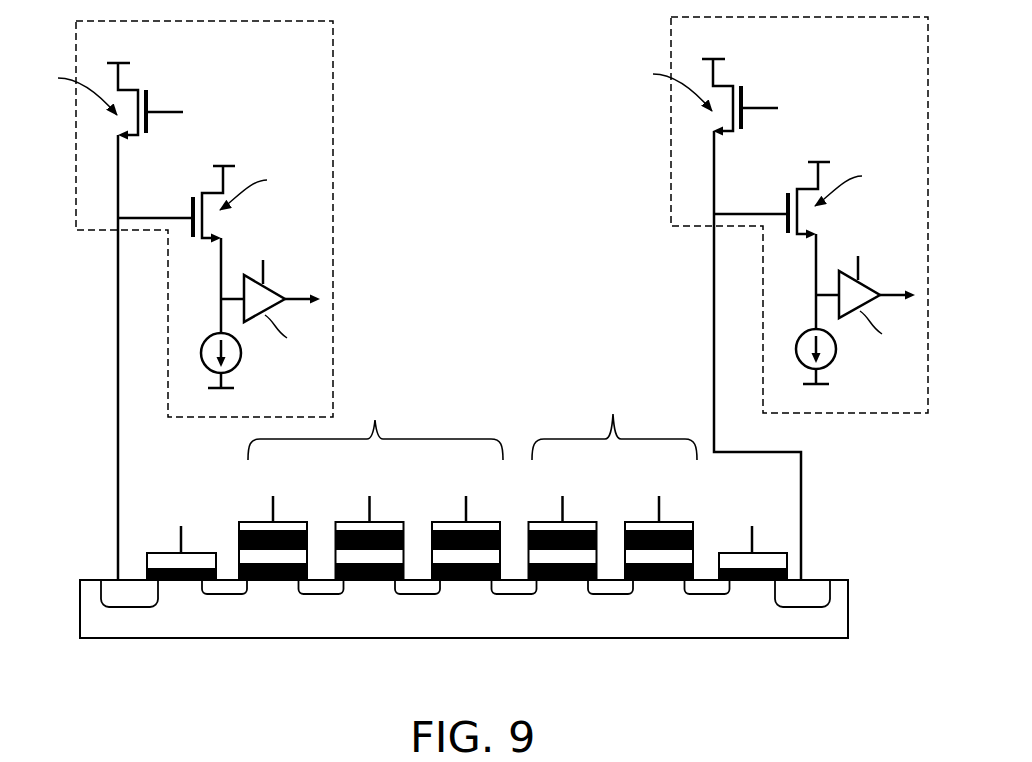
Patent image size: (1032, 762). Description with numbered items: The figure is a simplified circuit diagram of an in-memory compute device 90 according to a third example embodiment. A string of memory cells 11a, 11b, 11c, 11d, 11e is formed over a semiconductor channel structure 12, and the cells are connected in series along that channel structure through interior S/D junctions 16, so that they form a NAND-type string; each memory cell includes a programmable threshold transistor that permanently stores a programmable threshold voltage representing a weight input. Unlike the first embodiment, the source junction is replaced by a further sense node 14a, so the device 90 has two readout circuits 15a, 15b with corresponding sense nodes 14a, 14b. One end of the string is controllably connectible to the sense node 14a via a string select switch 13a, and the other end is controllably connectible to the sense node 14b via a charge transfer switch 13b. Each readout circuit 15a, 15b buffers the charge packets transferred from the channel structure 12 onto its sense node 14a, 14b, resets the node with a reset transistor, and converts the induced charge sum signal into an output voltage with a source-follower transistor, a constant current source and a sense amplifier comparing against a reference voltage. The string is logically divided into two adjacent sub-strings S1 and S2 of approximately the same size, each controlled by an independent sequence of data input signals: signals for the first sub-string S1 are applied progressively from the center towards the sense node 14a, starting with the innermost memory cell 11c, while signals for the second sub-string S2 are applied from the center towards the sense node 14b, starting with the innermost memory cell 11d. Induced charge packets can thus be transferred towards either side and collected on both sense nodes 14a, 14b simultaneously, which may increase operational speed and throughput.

The in-memory compute device 90 is at (862, 676).
The semiconductor channel structure 12 is at (565, 597).
The memory cell 11a is at (259, 517).
The memory cell 11b is at (355, 517).
The memory cell 11c is at (451, 517).
The memory cell 11d is at (548, 518).
The memory cell 11e is at (641, 518).
The string select switch 13a is at (169, 541).
The charge transfer switch 13b is at (741, 541).
The sense node 14a is at (128, 608).
The sense node 14b is at (798, 600).
The interior S/D junction 16 is at (320, 595).
The readout circuit 15a is at (333, 385).
The readout circuit 15b is at (670, 180).
The first sub-string S1 is at (375, 425).
The second sub-string S2 is at (614, 422).